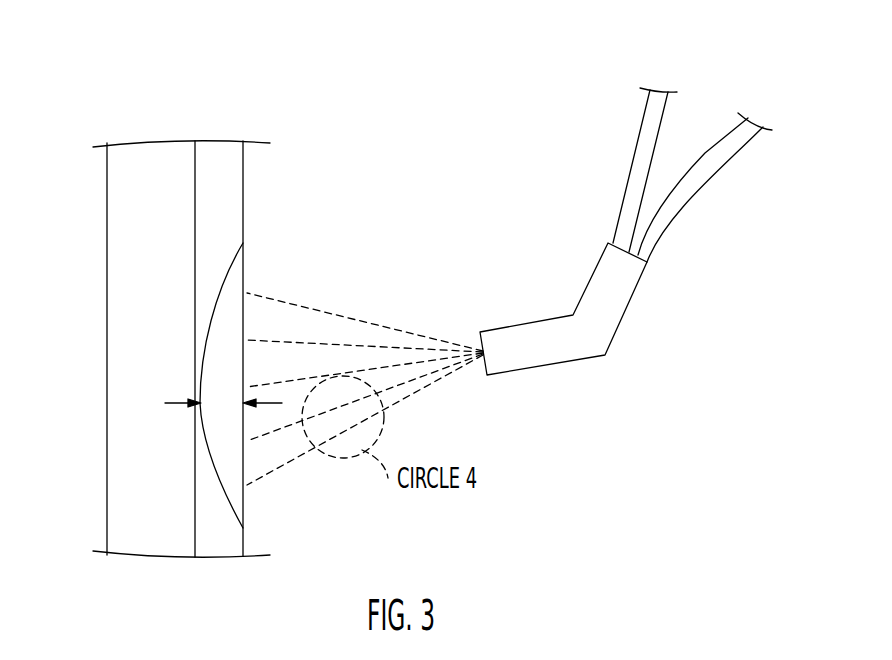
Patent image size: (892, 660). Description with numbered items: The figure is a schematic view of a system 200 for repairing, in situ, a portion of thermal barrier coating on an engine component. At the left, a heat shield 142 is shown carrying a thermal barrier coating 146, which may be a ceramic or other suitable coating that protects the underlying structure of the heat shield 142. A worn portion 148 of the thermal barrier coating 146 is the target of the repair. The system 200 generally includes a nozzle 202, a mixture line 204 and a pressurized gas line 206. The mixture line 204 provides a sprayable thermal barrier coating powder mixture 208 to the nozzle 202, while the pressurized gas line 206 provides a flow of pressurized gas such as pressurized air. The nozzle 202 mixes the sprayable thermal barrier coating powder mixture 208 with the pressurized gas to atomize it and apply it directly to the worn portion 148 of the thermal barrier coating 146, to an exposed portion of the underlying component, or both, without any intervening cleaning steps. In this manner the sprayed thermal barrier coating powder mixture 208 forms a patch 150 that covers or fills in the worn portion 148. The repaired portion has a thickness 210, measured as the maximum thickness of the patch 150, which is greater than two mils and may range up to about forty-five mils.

The heat shield 142 is at (145, 167).
The thermal barrier coating 146 is at (230, 180).
The worn portion 148 is at (288, 275).
The patch 150 is at (232, 453).
The thickness 210 is at (178, 399).
The system 200 is at (628, 224).
The nozzle 202 is at (600, 337).
The mixture line 204 is at (648, 101).
The pressurized gas line 206 is at (703, 155).
The sprayable thermal barrier coating powder mixture 208 is at (415, 306).